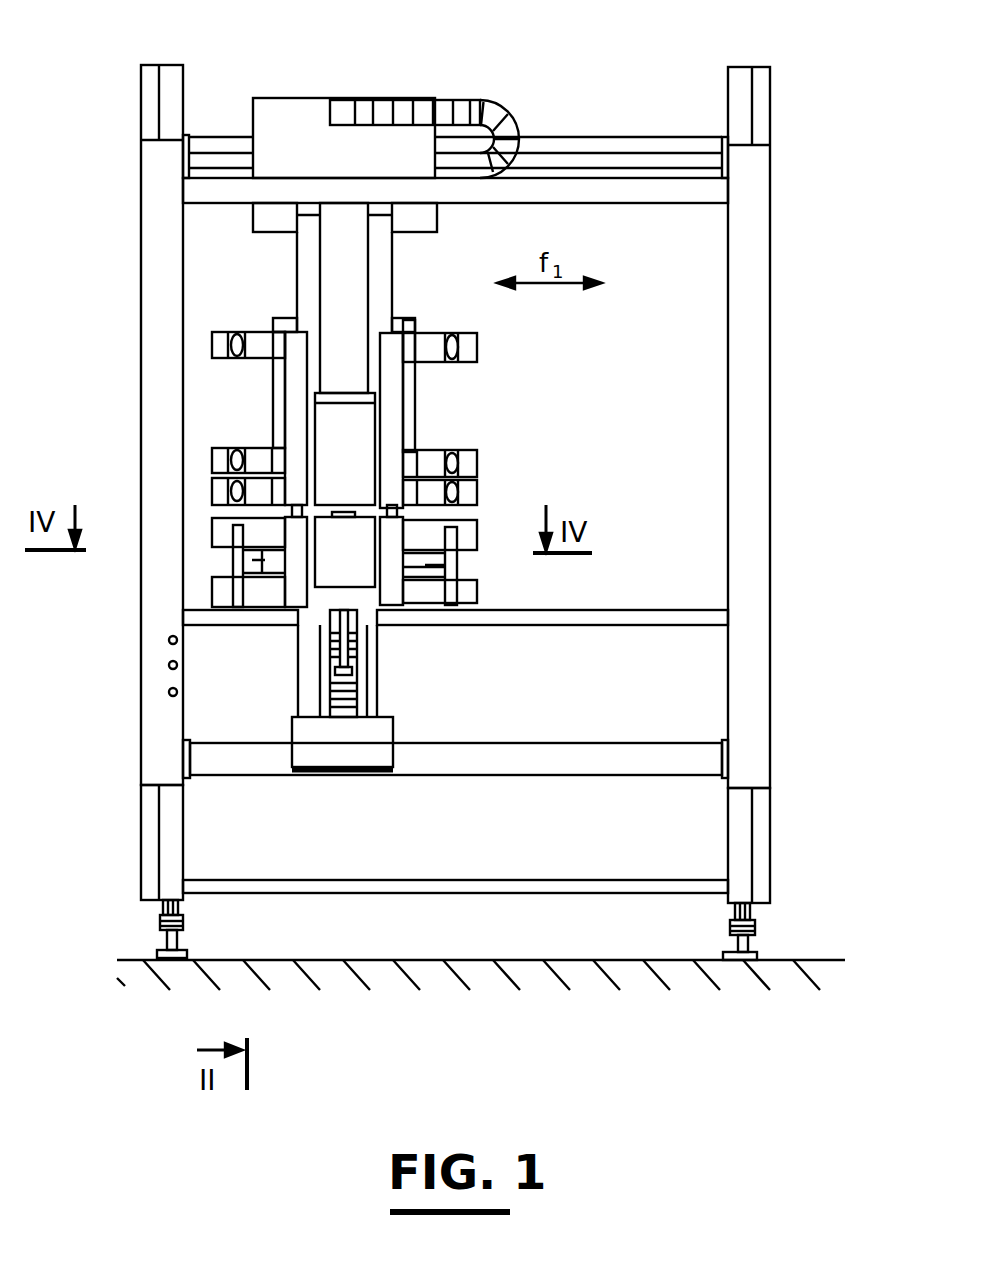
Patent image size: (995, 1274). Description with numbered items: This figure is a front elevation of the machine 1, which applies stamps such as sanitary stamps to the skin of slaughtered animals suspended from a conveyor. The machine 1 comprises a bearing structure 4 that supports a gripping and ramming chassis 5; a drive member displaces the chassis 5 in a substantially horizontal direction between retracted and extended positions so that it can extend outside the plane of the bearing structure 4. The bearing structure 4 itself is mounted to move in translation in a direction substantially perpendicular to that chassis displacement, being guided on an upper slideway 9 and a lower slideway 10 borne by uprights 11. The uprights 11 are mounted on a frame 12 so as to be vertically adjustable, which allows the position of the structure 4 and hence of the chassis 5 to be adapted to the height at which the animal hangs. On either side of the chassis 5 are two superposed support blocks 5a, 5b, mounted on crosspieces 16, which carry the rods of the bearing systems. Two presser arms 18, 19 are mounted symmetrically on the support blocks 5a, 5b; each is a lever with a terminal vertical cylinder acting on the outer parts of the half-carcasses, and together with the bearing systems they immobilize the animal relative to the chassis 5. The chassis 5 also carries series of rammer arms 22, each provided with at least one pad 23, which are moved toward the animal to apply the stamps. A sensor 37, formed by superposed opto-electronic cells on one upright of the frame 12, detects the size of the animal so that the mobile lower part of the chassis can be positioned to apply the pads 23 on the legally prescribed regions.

The machine 1 is at (775, 432).
The bearing structure 4 is at (298, 120).
The gripping and ramming chassis 5 is at (378, 463).
The support block 5a is at (287, 395).
The support block 5b is at (395, 387).
The upper slideway 9 is at (622, 160).
The lower slideway 10 is at (560, 765).
The uprights 11 is at (750, 730).
The frame 12 is at (150, 835).
The crosspieces 16 is at (375, 425).
The presser arm 18 is at (263, 553).
The presser arm 19 is at (437, 565).
The rammer arms 22 is at (254, 343).
The pad 23 is at (237, 458).
The sensor 37 is at (170, 665).